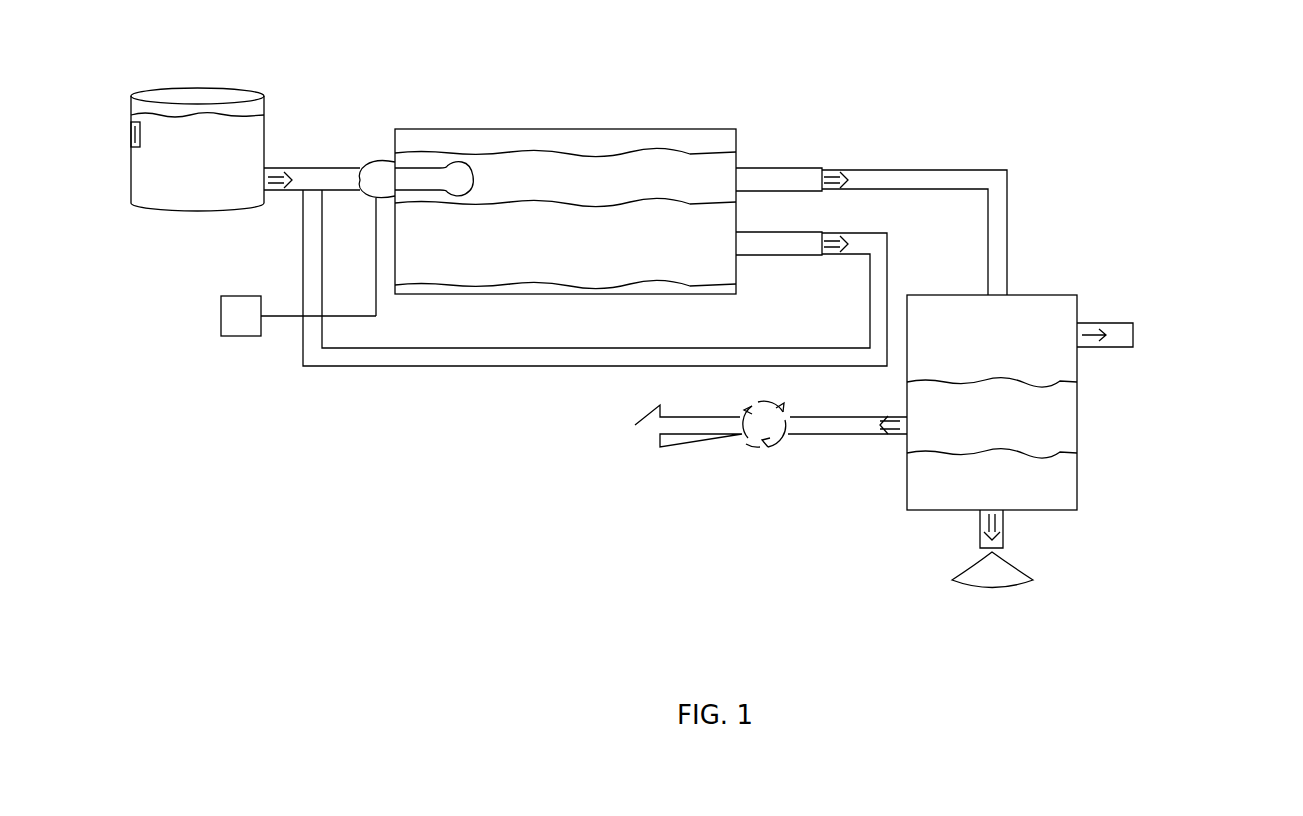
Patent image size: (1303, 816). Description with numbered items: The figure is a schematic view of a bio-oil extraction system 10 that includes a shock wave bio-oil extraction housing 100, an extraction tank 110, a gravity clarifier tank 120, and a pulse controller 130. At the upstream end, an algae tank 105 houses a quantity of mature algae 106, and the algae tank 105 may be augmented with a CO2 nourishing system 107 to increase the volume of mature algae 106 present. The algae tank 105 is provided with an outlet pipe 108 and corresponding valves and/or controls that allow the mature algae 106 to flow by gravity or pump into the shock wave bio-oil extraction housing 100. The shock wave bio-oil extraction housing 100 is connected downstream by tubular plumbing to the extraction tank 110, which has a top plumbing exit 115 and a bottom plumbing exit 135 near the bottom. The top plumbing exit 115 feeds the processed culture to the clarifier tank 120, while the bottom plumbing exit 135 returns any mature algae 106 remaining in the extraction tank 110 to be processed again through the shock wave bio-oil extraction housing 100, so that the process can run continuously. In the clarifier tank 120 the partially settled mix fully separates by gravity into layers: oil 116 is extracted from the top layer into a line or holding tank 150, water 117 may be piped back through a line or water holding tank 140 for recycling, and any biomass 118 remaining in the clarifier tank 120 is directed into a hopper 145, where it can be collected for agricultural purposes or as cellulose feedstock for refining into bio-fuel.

The bio-oil extraction system 10 is at (1147, 82).
The shock wave bio-oil extraction housing 100 is at (348, 127).
The algae tank 105 is at (223, 97).
The mature algae 106 is at (190, 204).
The CO2 nourishing system 107 is at (140, 123).
The outlet pipe 108 is at (310, 173).
The extraction tank 110 is at (523, 129).
The top plumbing exit 115 is at (925, 170).
The oil 116 is at (1052, 365).
The water 117 is at (1052, 420).
The biomass 118 is at (1057, 485).
The gravity clarifier tank 120 is at (968, 295).
The pulse controller 130 is at (240, 337).
The bottom plumbing exit 135 is at (597, 365).
The line or water holding tank 140 is at (673, 415).
The hopper 145 is at (1025, 575).
The line or holding tank 150 is at (1127, 322).